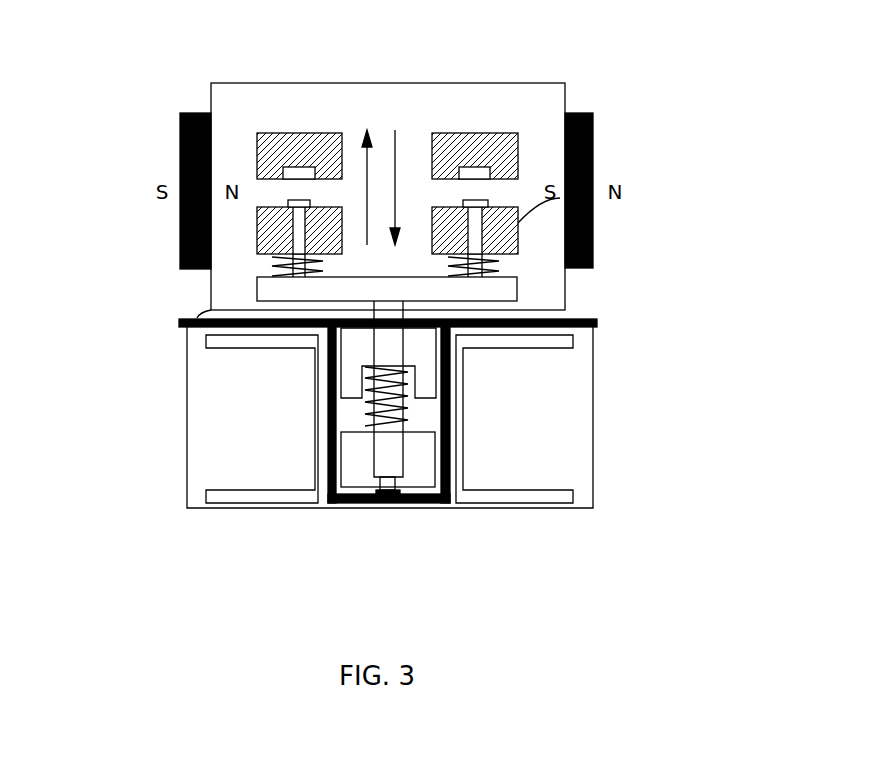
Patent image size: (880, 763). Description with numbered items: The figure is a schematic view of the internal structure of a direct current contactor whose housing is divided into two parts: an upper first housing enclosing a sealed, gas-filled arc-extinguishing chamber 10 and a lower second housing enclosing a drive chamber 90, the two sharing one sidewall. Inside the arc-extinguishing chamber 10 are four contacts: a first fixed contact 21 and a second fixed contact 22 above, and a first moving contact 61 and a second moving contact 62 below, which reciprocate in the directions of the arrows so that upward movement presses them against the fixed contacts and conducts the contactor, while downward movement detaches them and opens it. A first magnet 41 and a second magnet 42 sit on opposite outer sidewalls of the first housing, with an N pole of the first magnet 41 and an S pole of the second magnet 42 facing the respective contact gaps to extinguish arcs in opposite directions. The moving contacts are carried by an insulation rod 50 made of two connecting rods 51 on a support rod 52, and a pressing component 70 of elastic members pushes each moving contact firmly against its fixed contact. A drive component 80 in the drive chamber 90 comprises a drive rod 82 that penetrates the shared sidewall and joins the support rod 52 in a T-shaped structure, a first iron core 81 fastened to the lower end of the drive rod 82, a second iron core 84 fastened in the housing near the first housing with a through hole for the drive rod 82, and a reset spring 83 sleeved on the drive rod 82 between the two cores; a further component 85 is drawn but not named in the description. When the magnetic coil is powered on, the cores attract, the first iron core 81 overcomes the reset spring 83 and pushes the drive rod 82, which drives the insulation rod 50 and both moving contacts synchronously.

The arc-extinguishing chamber 10 is at (225, 100).
The first fixed contact 21 is at (288, 133).
The second fixed contact 22 is at (494, 133).
The first magnet 41 is at (180, 160).
The second magnet 42 is at (595, 135).
The insulation rod 50 is at (500, 369).
The connecting rod 51 is at (580, 268).
The support rod 52 is at (513, 288).
The first moving contact 61 is at (297, 225).
The second moving contact 62 is at (477, 240).
The pressing component 70 is at (277, 260).
The drive component 80 is at (464, 477).
The first iron core 81 is at (355, 459).
The drive rod 82 is at (392, 460).
The reset spring 83 is at (407, 407).
The second iron core 84 is at (430, 385).
The coil holder 85 is at (557, 491).
The drive chamber 90 is at (200, 447).